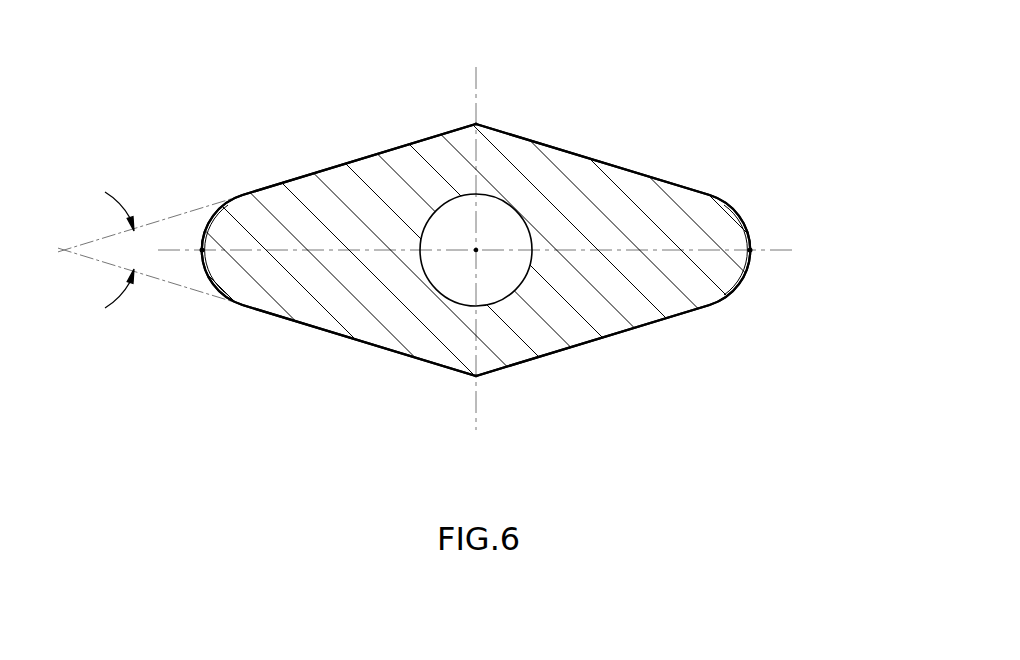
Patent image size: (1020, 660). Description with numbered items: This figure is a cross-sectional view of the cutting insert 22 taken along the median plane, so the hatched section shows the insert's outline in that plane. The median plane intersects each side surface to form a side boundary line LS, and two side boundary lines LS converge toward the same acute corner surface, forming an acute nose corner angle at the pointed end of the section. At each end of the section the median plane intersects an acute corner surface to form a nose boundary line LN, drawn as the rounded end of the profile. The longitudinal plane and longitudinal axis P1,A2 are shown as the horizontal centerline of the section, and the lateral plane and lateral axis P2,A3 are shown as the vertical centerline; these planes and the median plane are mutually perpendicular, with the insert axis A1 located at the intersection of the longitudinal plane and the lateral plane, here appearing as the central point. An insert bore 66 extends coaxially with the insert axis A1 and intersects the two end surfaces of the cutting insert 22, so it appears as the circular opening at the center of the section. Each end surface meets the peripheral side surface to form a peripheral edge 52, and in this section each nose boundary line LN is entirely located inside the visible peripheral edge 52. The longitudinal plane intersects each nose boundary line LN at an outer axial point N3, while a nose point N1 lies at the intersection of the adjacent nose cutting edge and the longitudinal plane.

The cutting insert 22 is at (543, 367).
The peripheral edge 52 is at (213, 208).
The insert bore 66 is at (443, 270).
The insert axis A1 is at (492, 239).
The longitudinal plane and longitudinal axis P1,A2 is at (529, 253).
The lateral plane and lateral axis P2,A3 is at (477, 210).
The side boundary line LS is at (650, 397).
The nose boundary line LN is at (797, 187).
The nose point N1 is at (202, 251).
The outer axial point N3 is at (214, 292).